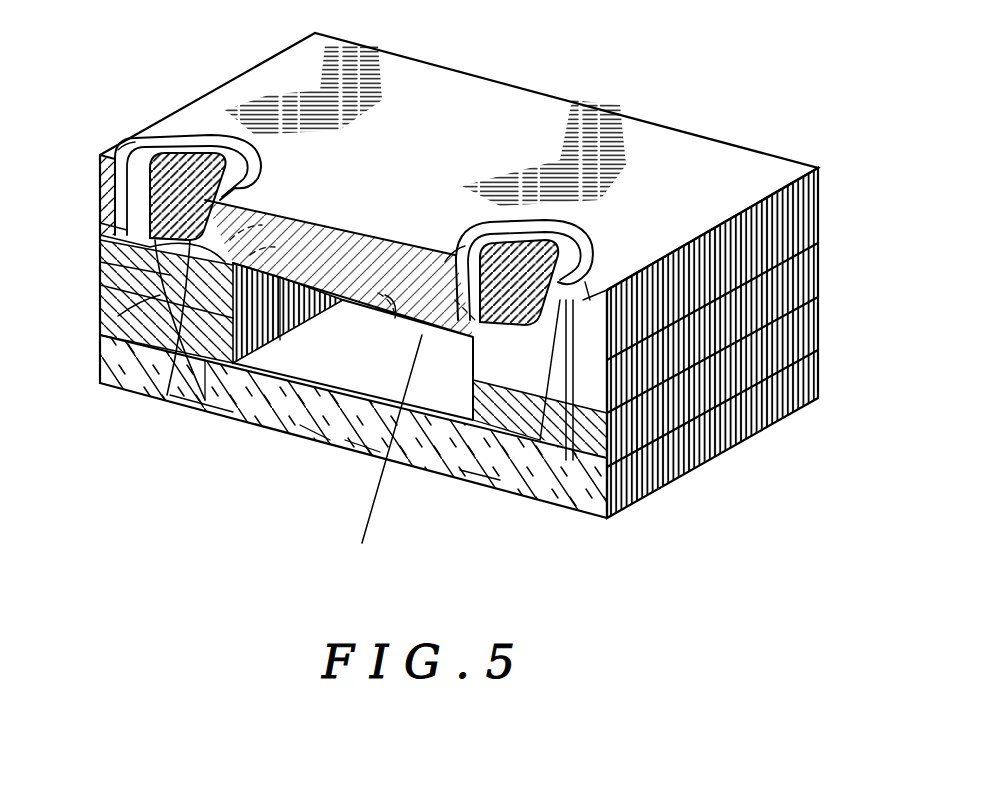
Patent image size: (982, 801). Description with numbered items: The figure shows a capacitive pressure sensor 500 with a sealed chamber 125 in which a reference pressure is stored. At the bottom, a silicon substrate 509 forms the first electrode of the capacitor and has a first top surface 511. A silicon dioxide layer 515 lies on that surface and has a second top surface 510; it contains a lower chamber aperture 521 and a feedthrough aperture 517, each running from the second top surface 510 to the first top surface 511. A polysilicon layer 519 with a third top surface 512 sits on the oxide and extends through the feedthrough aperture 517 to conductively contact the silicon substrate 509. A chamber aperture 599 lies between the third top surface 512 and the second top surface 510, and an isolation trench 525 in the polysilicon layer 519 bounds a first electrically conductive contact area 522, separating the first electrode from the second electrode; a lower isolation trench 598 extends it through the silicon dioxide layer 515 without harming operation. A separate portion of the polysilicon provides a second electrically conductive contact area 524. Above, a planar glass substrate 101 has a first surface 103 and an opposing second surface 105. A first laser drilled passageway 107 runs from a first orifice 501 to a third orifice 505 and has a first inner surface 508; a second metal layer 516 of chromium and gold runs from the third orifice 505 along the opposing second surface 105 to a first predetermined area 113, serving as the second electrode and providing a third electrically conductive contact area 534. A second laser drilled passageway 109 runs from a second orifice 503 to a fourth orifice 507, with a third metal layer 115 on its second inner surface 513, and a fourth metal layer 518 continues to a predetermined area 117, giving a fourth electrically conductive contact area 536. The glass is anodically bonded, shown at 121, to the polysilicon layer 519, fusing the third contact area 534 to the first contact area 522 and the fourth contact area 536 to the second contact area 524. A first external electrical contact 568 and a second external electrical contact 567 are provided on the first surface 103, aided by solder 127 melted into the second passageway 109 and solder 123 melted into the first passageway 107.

The glass substrate 101 is at (112, 178).
The first surface 103 is at (400, 68).
The opposing second surface 105 is at (283, 345).
The first laser drilled passageway 107 is at (470, 305).
The second laser drilled passageway 109 is at (170, 395).
The first predetermined area 113 is at (392, 290).
The third metal layer 115 is at (262, 205).
The predetermined area 117 is at (238, 232).
The anodic bond 121 is at (100, 235).
The solder 123 is at (490, 245).
The sealed chamber 125 is at (352, 445).
The solder 127 is at (190, 175).
The capacitive pressure sensor 500 is at (287, 600).
The first orifice 501 is at (578, 262).
The second orifice 503 is at (135, 143).
The third orifice 505 is at (475, 480).
The fourth orifice 507 is at (208, 400).
The first inner surface 508 is at (452, 255).
The silicon substrate 509 is at (100, 384).
The second top surface 510 is at (497, 445).
The first top surface 511 is at (353, 341).
The third top surface 512 is at (802, 250).
The second inner surface 513 is at (150, 203).
The silicon dioxide layer 515 is at (118, 318).
The second metal layer 516 is at (385, 305).
The feedthrough aperture 517 is at (100, 355).
The fourth metal layer 518 is at (266, 249).
The polysilicon layer 519 is at (100, 283).
The lower chamber aperture 521 is at (312, 430).
The first electrically conductive contact area 522 is at (590, 300).
The second electrically conductive contact area 524 is at (118, 316).
The isolation trench 525 is at (586, 460).
The third electrically conductive contact area 534 is at (612, 360).
The fourth electrically conductive contact area 536 is at (100, 262).
The second external electrical contact 567 is at (595, 230).
The first external electrical contact 568 is at (210, 135).
The lower isolation trench 598 is at (558, 485).
The chamber aperture 599 is at (376, 454).